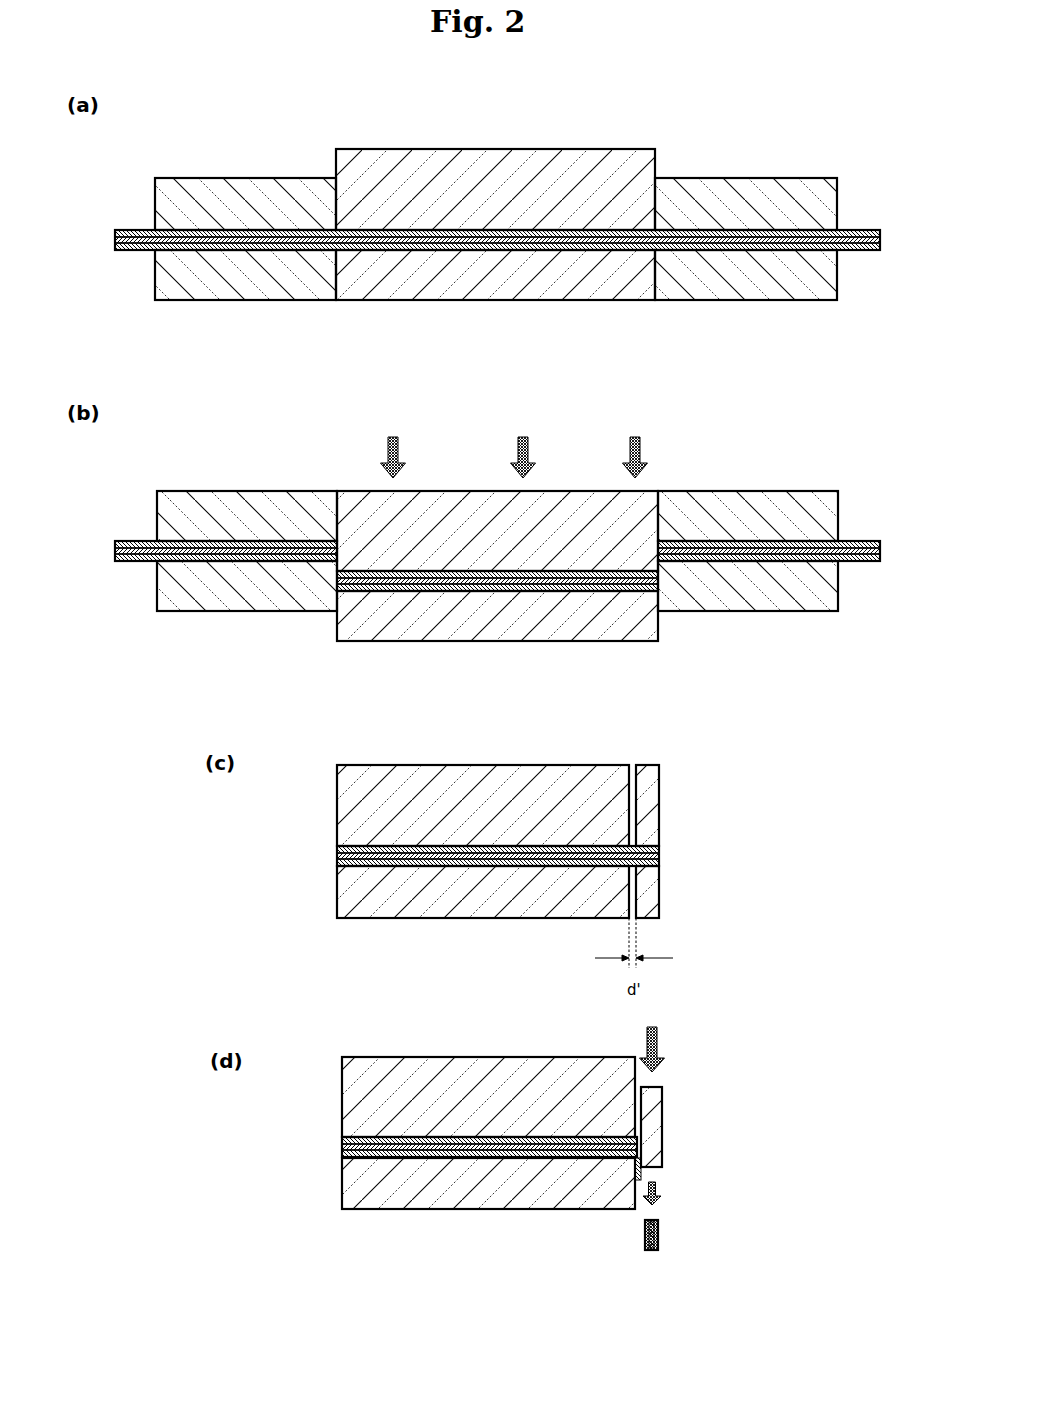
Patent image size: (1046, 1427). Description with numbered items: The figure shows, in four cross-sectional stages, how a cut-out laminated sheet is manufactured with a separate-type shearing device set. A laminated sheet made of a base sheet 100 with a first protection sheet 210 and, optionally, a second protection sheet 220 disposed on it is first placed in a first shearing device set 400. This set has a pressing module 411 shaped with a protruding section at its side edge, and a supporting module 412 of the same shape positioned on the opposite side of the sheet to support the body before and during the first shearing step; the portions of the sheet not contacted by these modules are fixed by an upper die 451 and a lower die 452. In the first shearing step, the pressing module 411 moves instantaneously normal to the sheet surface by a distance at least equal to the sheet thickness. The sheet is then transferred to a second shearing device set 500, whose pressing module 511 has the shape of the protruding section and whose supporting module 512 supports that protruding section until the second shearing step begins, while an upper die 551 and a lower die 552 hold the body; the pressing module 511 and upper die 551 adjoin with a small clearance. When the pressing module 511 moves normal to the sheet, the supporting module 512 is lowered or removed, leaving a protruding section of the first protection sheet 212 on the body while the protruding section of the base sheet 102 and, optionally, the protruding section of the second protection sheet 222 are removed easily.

The base sheet 100 is at (115, 240).
The protruding section of a base sheet 102 is at (645, 1250).
The first protection sheet 210 is at (138, 250).
The protruding section of a first protection sheet 212 is at (633, 1207).
The second protection sheet 220 is at (140, 230).
The protruding section of a second protection sheet 222 is at (657, 1250).
The first shearing device set 400 is at (341, 112).
The pressing module 411 is at (440, 149).
The supporting module 412 is at (420, 300).
The upper die 451 is at (200, 178).
The lower die 452 is at (224, 300).
The second shearing device set 500 is at (351, 742).
The pressing module 511 is at (648, 765).
The supporting module 512 is at (659, 910).
The upper die 551 is at (437, 765).
The lower die 552 is at (419, 918).